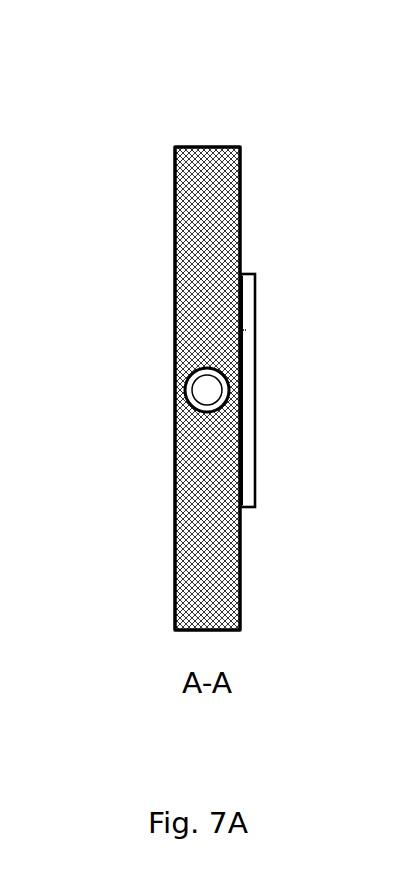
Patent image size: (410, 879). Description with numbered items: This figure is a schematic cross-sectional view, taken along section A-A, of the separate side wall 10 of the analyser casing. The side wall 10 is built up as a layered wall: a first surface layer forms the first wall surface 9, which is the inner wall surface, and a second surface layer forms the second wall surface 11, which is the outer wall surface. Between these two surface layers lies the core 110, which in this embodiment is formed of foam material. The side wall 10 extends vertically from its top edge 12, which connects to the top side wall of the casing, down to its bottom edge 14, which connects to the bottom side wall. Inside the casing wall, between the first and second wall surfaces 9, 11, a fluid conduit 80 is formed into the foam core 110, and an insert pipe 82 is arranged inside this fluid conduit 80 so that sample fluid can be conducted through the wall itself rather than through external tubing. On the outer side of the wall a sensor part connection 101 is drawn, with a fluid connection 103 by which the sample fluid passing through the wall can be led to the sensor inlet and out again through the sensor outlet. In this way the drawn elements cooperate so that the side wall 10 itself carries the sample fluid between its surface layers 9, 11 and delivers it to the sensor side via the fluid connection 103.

The first wall surface 9 is at (175, 190).
The side wall 10 is at (240, 147).
The second wall surface 11 is at (242, 195).
The top edge 12 is at (208, 147).
The bottom edge 14 is at (212, 632).
The fluid conduit 80 is at (204, 366).
The insert pipe 82 is at (193, 395).
The side attachment plate 101 is at (256, 298).
The fluid connection 103 is at (247, 452).
The core 110 is at (200, 597).